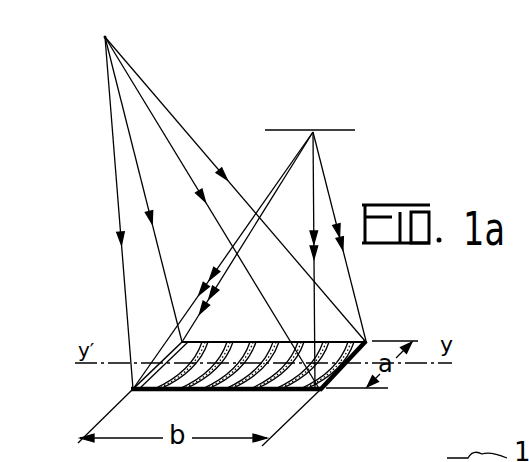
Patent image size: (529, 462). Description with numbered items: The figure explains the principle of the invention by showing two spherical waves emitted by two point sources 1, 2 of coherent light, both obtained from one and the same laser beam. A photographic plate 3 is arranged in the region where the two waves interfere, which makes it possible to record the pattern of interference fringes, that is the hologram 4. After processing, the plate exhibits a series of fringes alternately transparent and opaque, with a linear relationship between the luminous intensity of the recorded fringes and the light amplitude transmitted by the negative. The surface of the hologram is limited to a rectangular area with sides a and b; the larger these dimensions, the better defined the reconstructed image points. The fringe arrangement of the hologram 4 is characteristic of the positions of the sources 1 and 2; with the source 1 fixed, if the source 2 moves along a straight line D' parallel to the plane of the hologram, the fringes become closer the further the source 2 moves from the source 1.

The point source 1 is at (230, 201).
The point source 2 is at (257, 248).
The photographic plate 3 is at (241, 342).
The hologram 4 is at (232, 392).